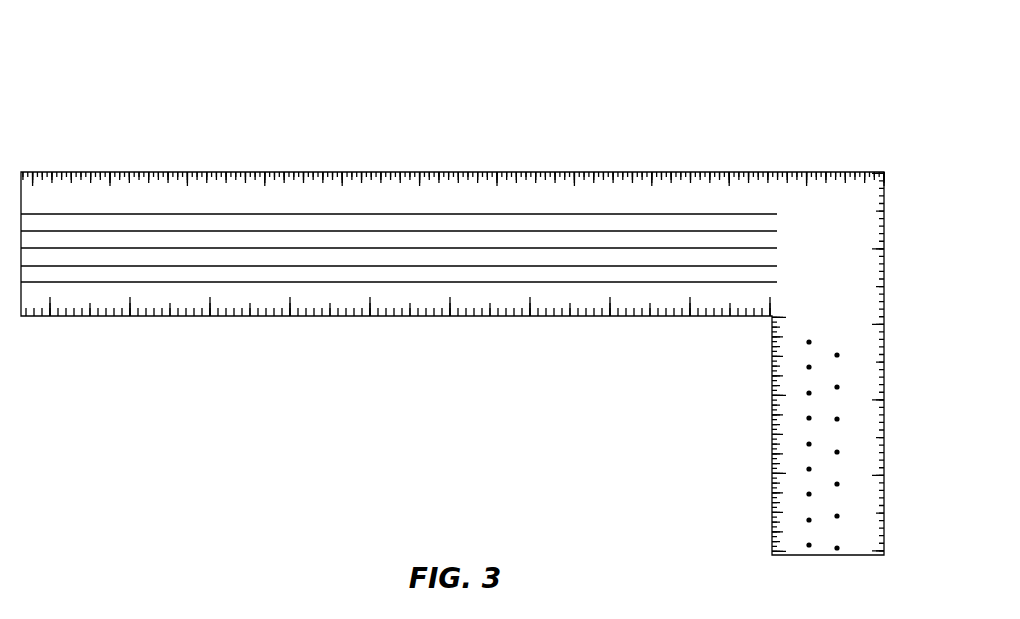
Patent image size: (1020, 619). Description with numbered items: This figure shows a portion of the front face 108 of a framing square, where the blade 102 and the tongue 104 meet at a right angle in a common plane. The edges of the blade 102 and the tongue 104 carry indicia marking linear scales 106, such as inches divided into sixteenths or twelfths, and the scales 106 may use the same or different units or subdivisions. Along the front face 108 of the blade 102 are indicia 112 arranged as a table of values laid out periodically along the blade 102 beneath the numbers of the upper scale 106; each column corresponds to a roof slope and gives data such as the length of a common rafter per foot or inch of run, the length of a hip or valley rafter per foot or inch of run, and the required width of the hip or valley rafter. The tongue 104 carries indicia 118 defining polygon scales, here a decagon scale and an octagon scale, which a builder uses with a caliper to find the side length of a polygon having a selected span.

The blade 102 is at (624, 138).
The tongue 104 is at (752, 425).
The linear scales 106 is at (210, 172).
The front face 108 is at (83, 190).
The indicia 112 is at (393, 222).
The indicia 118 is at (835, 308).